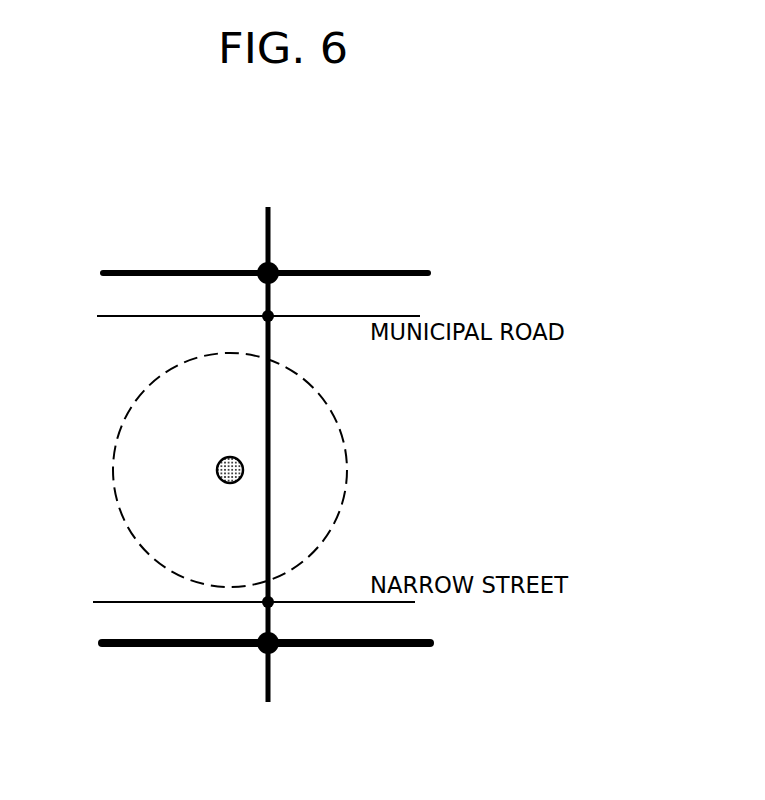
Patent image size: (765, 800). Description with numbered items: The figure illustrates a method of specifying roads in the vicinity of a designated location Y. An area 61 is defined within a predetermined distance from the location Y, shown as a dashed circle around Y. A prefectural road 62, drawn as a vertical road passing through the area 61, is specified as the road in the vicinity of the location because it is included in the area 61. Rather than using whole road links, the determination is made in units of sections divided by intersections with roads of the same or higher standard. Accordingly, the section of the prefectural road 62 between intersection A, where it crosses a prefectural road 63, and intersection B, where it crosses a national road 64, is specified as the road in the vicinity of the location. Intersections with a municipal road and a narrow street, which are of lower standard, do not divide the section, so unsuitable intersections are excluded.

The area 61 is at (230, 470).
The prefectural road 62 is at (270, 428).
The prefectural road 63 is at (330, 273).
The national road 64 is at (336, 647).